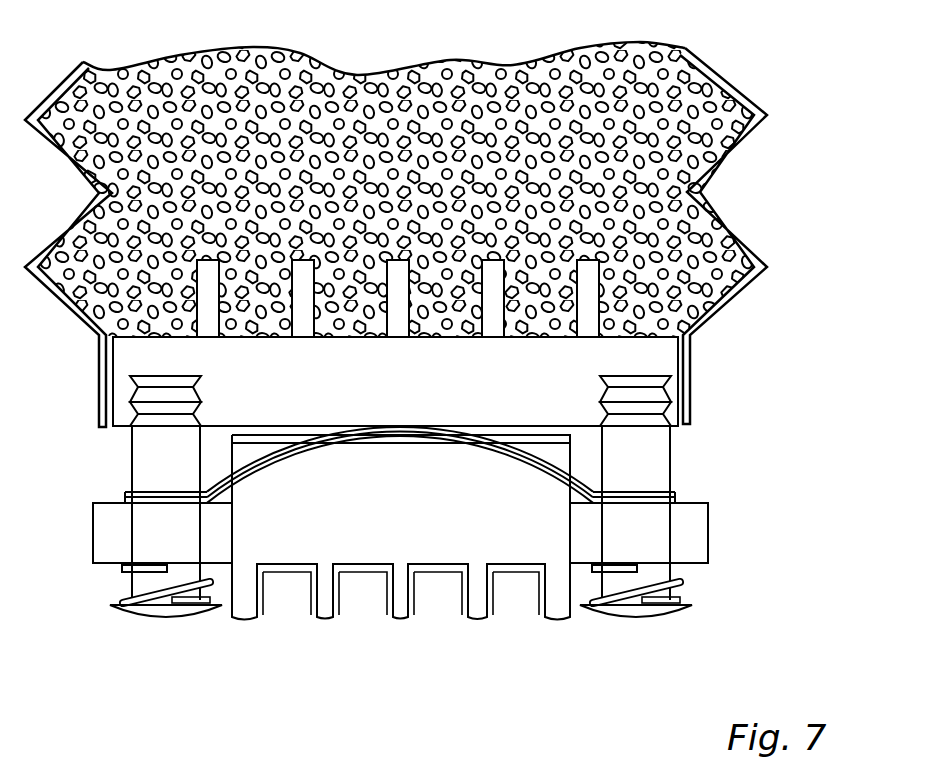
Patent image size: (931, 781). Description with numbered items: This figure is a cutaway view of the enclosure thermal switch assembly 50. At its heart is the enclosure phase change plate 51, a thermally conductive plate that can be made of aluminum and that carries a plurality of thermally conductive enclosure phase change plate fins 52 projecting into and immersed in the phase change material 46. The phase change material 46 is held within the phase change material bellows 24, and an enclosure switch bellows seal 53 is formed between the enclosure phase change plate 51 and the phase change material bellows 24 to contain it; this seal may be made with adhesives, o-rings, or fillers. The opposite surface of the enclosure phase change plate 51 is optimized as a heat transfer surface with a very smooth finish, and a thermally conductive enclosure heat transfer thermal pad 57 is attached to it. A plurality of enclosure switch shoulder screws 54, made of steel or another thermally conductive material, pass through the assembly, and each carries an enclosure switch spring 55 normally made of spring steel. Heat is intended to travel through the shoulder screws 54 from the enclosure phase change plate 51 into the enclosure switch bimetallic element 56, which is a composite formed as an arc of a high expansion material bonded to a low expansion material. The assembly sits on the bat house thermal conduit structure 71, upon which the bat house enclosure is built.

The phase change material bellows 24 is at (755, 110).
The phase change material 46 is at (673, 183).
The enclosure thermal switch assembly 50 is at (820, 446).
The enclosure phase change plate 51 is at (673, 410).
The enclosure phase change plate fins 52 is at (600, 273).
The enclosure switch bellows seal 53 is at (690, 375).
The enclosure switch shoulder screw 54 is at (130, 612).
The enclosure switch spring 55 is at (147, 590).
The enclosure switch bimetallic element 56 is at (258, 470).
The enclosure heat transfer thermal pad 57 is at (547, 443).
The bat house thermal conduit structure 71 is at (267, 533).